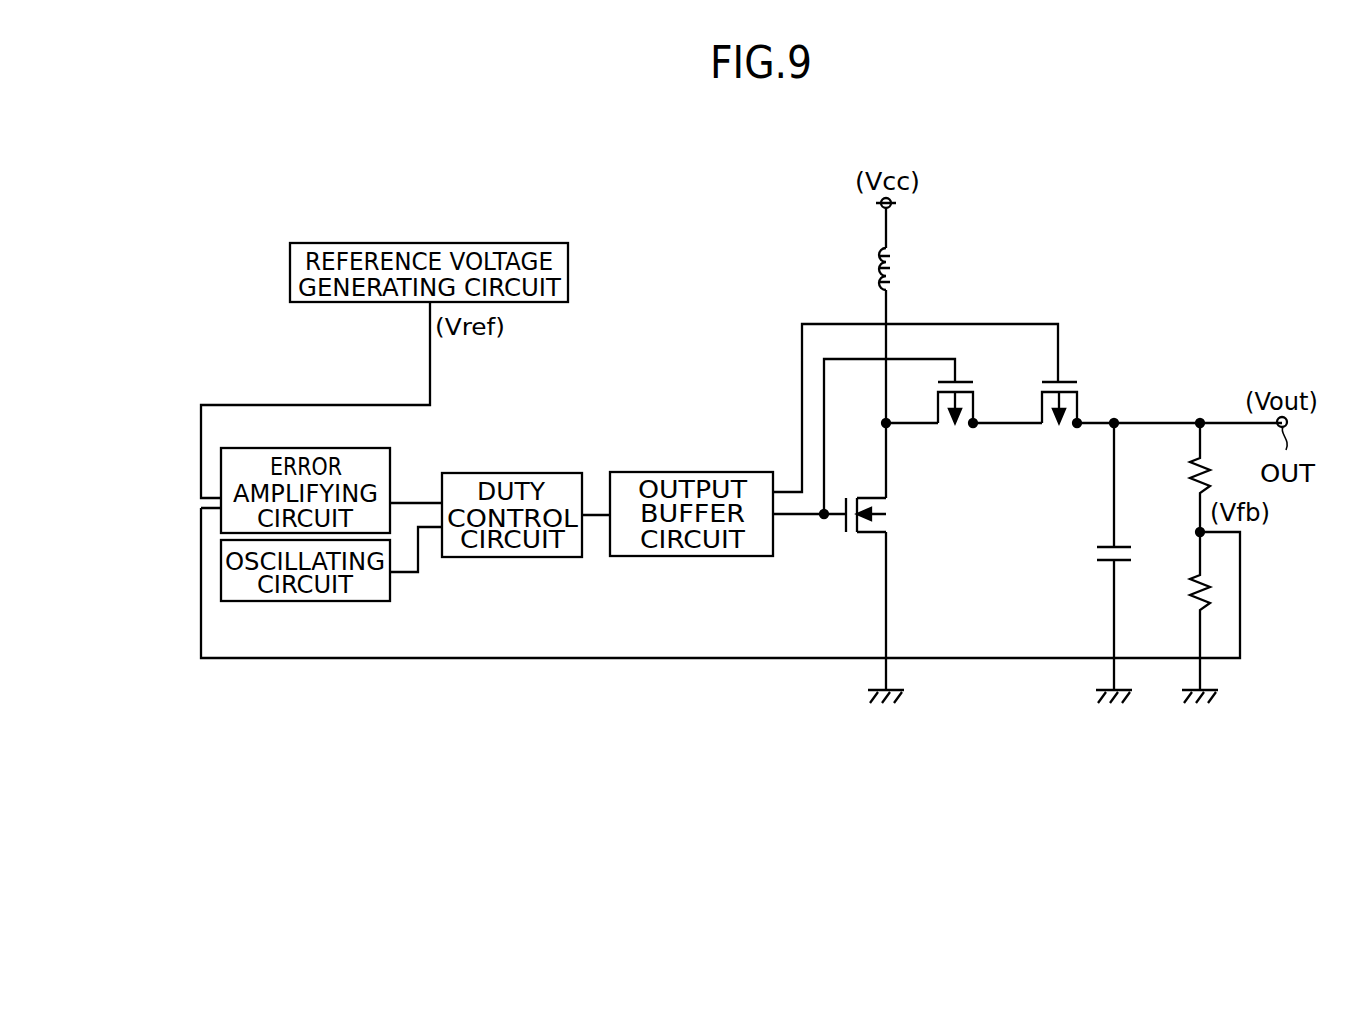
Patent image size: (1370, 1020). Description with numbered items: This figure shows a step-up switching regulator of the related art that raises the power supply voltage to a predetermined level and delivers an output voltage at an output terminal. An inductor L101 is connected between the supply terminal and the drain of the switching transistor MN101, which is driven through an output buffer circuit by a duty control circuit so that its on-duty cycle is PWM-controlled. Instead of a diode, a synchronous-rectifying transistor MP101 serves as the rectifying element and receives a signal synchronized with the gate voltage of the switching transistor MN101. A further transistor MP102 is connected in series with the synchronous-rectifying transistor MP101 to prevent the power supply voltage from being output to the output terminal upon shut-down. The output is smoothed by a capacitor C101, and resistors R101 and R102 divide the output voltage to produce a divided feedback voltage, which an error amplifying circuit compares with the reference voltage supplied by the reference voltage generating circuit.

The inductor L101 is at (918, 269).
The synchronous-rectifying transistor MP101 is at (953, 419).
The transistor MP102 is at (1060, 419).
The switching transistor MN101 is at (908, 556).
The capacitor C101 is at (1090, 556).
The resistor R101 is at (1168, 477).
The resistor R102 is at (1168, 611).